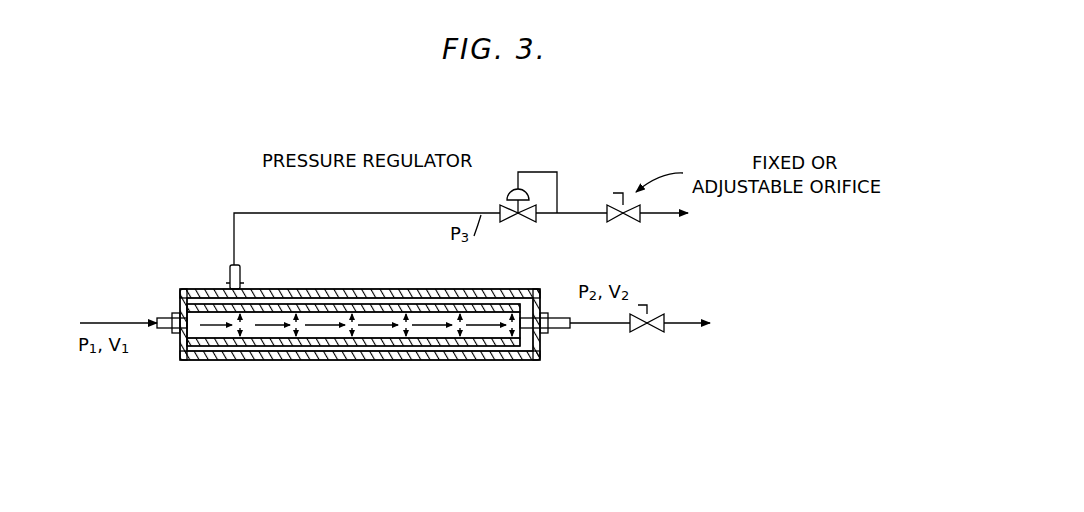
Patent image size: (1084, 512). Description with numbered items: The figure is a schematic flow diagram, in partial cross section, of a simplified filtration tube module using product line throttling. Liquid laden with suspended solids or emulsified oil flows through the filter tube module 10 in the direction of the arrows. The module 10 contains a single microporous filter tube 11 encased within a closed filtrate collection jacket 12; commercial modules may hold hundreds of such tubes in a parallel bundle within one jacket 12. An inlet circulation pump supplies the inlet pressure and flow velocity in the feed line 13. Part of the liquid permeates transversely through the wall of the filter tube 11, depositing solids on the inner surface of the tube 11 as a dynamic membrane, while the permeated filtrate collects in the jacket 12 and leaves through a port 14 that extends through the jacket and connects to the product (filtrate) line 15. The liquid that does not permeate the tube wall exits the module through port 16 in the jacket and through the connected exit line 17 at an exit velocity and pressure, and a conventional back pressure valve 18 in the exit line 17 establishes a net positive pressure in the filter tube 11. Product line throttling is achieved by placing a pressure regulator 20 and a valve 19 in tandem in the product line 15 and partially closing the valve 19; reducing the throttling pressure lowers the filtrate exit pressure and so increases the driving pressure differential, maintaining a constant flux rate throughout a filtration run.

The filter tube module 10 is at (371, 337).
The microporous filter tube 11 is at (476, 306).
The closed filtrate collection jacket 12 is at (540, 305).
The feed line 13 is at (100, 320).
The port 14 is at (229, 280).
The product (filtrate) line 15 is at (330, 216).
The port 16 is at (552, 340).
The exit line 17 is at (590, 326).
The back pressure valve 18 is at (655, 334).
The valve 19 is at (606, 208).
The pressure regulator 20 is at (510, 203).